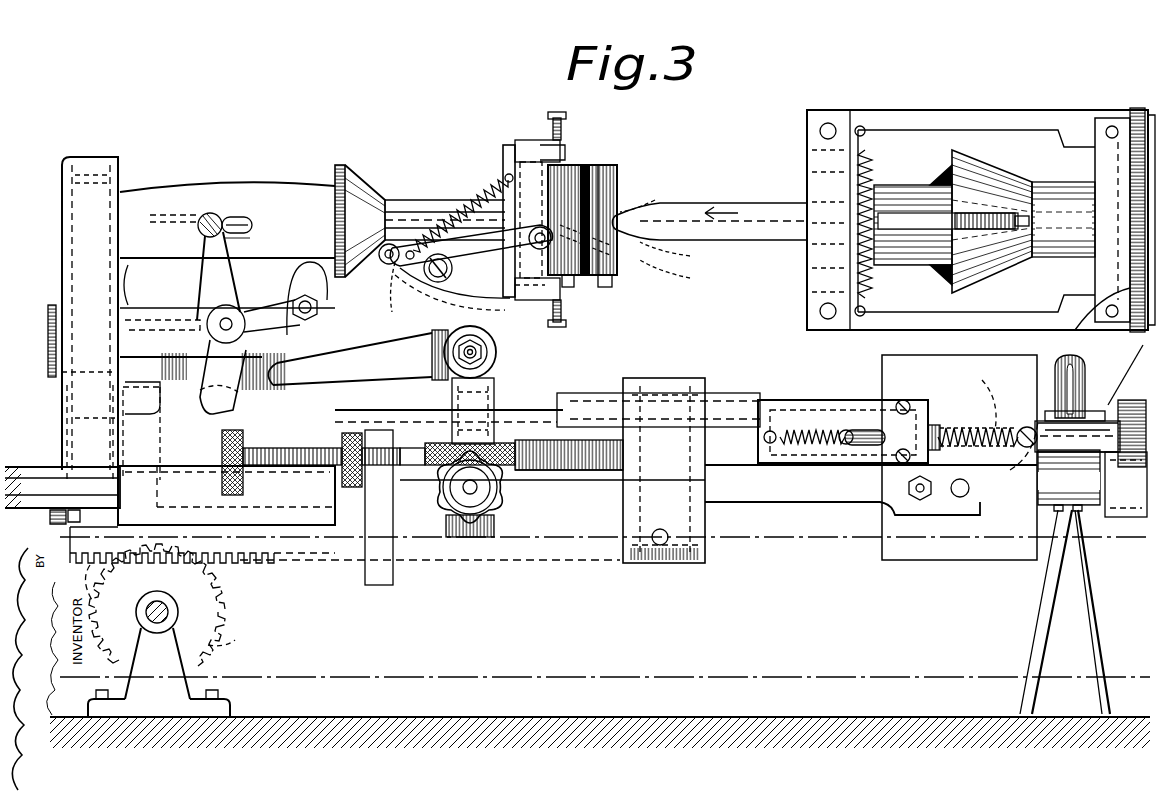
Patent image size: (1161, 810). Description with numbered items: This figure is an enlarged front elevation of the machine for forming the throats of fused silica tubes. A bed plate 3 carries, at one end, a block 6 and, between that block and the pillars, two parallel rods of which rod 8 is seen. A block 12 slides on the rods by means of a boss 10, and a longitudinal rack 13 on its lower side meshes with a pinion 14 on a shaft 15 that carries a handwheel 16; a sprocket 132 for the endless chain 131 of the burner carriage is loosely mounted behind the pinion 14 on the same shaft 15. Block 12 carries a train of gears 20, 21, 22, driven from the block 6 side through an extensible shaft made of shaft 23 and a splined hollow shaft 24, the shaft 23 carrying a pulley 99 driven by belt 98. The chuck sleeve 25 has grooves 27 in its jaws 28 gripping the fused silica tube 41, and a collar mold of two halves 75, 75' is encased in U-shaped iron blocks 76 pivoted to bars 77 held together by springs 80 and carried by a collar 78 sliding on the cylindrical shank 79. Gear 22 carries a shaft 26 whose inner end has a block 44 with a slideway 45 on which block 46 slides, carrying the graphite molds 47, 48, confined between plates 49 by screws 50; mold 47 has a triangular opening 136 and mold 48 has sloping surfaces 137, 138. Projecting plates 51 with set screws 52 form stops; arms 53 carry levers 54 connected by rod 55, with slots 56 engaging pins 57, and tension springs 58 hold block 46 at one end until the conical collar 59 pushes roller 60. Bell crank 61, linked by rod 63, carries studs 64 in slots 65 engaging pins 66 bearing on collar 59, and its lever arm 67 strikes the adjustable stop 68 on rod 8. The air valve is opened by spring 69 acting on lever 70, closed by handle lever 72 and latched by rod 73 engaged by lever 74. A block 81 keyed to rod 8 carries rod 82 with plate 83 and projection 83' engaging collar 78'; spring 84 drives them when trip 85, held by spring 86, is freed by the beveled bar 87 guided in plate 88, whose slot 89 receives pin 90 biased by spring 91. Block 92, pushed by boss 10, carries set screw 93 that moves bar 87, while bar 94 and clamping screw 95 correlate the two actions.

The bed plate 3 is at (683, 717).
The block 6 is at (1130, 392).
The rod 8 is at (36, 452).
The boss 10 is at (302, 515).
The block 12 is at (285, 292).
The longitudinal rack 13 is at (256, 563).
The pinion 14 is at (196, 611).
The shaft 15 is at (158, 600).
The handwheel 16 is at (236, 640).
The gear 20 is at (75, 421).
The gear 21 is at (112, 294).
The gear 22 is at (86, 238).
The shaft 23 is at (548, 420).
The hollow shaft 24 is at (512, 410).
The chuck sleeve 25 is at (1002, 190).
The shaft 26 is at (424, 208).
The grooves 27 is at (938, 172).
The jaws 28 is at (908, 205).
The fused silica tube 41 is at (750, 215).
The block 44 is at (503, 170).
The slideway 45 is at (512, 294).
The block 46 is at (562, 180).
The graphite mold 47 is at (618, 200).
The graphite mold 48 is at (612, 246).
The plates 49 is at (598, 165).
The screws 50 is at (608, 287).
The projecting plate 51 is at (528, 142).
The set screw 52 is at (560, 122).
The arms 53 is at (452, 291).
The levers 54 is at (432, 282).
The rod 55 is at (386, 263).
The slots 56 is at (574, 284).
The pins 57 is at (524, 236).
The tension springs 58 is at (462, 205).
The collar 59 is at (362, 190).
The roller 60 is at (392, 291).
The bell crank 61 is at (203, 244).
The rod 63 is at (312, 318).
The stud 64 is at (213, 212).
The slots 65 is at (240, 217).
The pins 66 is at (252, 232).
The lever arm 67 is at (218, 398).
The stop 68 is at (382, 355).
The spring 69 is at (50, 521).
The lever 70 is at (66, 528).
The handle lever 72 is at (48, 351).
The adjustable rod 73 is at (62, 374).
The lever 74 is at (200, 318).
The collar mold part 75 is at (805, 190).
The collar mold part 75' is at (804, 263).
The U-shaped iron block 76 is at (818, 168).
The bars 77 is at (916, 112).
The collar 78 is at (1089, 220).
The collar 78' is at (1086, 317).
The cylindrical shank 79 is at (1060, 252).
The springs 80 is at (872, 280).
The block 81 is at (940, 370).
The rod 82 is at (1112, 478).
The bar or plate 83 is at (1118, 256).
The projection 83' is at (1124, 197).
The spring 84 is at (1025, 480).
The trip 85 is at (966, 430).
The spring 86 is at (1010, 452).
The bar or rod 87 is at (411, 446).
The plate 88 is at (822, 405).
The slot 89 is at (852, 428).
The pin 90 is at (850, 446).
The spring 91 is at (790, 430).
The block 92 is at (393, 572).
The set screw 93 is at (330, 446).
The bar 94 is at (746, 487).
The clamping screw 95 is at (478, 540).
The belt 98 is at (1098, 630).
The pulley 99 is at (1086, 378).
The endless chain 131 is at (523, 670).
The sprocket 132 is at (98, 568).
The opening 136 is at (658, 194).
The sloping surface 137 is at (685, 278).
The sloping surface 138 is at (684, 257).